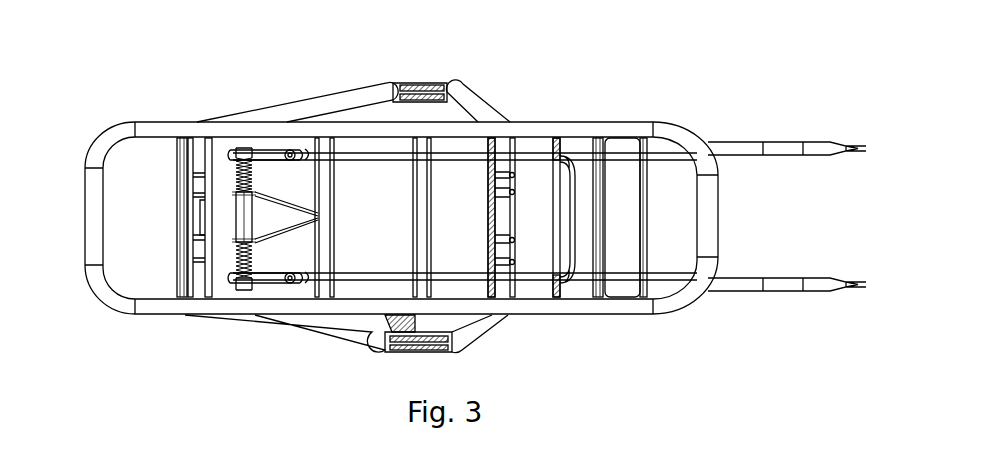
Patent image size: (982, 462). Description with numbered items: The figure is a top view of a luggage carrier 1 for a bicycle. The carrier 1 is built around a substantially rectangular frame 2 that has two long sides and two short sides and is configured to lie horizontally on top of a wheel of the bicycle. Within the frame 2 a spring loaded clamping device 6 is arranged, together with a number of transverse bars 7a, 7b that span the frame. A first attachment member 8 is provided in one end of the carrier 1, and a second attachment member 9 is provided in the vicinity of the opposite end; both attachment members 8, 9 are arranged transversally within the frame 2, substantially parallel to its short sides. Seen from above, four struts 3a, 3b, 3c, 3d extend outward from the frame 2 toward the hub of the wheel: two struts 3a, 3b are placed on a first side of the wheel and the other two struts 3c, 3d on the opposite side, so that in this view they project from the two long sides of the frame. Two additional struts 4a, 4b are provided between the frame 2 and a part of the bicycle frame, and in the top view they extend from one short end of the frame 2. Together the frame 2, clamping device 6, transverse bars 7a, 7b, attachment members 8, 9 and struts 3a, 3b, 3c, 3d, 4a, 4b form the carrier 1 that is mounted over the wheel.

The luggage carrier 1 is at (270, 60).
The frame 2 is at (128, 114).
The strut 3a is at (308, 337).
The strut 3b is at (488, 325).
The strut 3c is at (343, 93).
The strut 3d is at (480, 98).
The additional strut 4a is at (756, 278).
The additional strut 4b is at (750, 142).
The spring loaded clamping device 6 is at (523, 272).
The transverse bar 7a is at (326, 266).
The transverse bar 7b is at (410, 200).
The first attachment member 8 is at (181, 147).
The second attachment member 9 is at (517, 175).